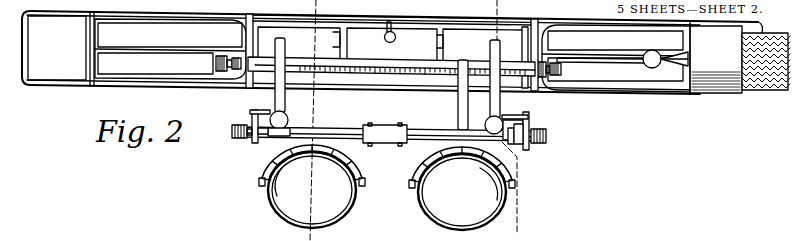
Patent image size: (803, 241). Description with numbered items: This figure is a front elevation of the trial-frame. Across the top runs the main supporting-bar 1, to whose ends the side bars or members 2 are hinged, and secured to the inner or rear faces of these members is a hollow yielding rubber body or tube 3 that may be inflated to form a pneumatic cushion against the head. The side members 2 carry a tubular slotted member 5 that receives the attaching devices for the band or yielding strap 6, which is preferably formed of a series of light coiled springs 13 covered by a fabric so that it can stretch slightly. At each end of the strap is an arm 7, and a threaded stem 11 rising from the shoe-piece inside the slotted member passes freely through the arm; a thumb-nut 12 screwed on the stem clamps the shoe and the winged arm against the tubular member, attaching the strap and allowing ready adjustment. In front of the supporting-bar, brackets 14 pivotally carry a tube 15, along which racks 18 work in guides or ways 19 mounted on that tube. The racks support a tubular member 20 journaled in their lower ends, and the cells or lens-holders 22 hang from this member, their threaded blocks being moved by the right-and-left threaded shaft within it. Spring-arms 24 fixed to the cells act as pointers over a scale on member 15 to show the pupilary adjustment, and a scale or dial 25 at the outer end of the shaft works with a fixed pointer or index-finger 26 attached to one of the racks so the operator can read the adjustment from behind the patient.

The main supporting-bar 1 is at (366, 91).
The side bars or members 2 is at (150, 30).
The hollow yielding body or tube 3 is at (395, 18).
The tubular slotted member 5 is at (392, 55).
The band or yielding strap 6 is at (712, 40).
The arm 7 is at (672, 56).
The threaded stem 11 is at (382, 38).
The thumb-nut 12 is at (647, 54).
The light coiled springs 13 is at (748, 96).
The brackets 14 is at (246, 16).
The tube 15 is at (403, 60).
The racks 18 is at (276, 108).
The guides or ways 19 is at (492, 47).
The tubular member 20 is at (392, 127).
The cells or lens-holders 22 is at (387, 187).
The spring-arms 24 is at (318, 110).
The scale or dial 25 is at (392, 144).
The fixed pointer or index-finger 26 is at (530, 120).